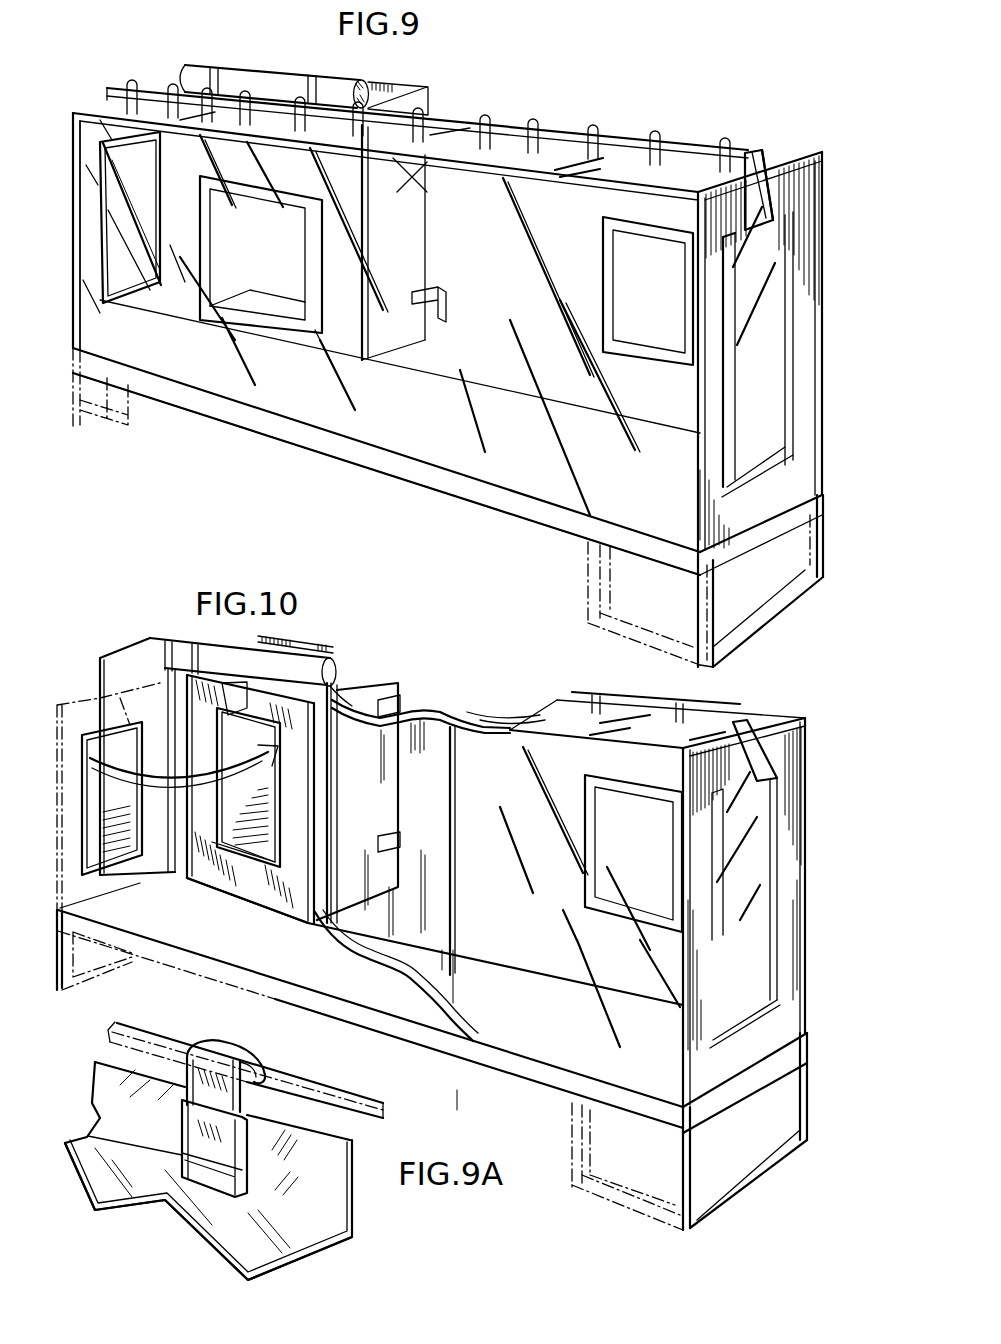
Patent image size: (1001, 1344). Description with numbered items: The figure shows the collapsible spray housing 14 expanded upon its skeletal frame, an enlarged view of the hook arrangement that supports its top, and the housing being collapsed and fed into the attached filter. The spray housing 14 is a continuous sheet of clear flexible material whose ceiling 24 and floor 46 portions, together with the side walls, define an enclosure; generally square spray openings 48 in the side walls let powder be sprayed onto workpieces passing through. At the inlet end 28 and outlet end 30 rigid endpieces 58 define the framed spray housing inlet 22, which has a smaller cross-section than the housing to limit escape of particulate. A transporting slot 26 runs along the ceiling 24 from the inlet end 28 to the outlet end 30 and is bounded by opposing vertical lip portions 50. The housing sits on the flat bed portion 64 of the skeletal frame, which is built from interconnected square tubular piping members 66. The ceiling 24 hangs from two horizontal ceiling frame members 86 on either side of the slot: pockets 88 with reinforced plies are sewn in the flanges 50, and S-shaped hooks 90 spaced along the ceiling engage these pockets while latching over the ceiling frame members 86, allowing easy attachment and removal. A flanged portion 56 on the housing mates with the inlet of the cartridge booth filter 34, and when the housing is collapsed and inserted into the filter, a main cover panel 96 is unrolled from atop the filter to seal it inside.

In FIG. 9, the spray housing 14 is at (697, 112).
In FIG. 9, the spray housing inlet 22 is at (747, 463).
In FIG. 9, the ceiling 24 is at (797, 117).
In FIG. 10, the ceiling 24 is at (625, 715).
In FIG. 9A, the ceiling 24 is at (302, 1238).
In FIG. 9, the transporting slot 26 is at (760, 195).
In FIG. 9, the inlet end 28 is at (712, 513).
In FIG. 9, the outlet end 30 is at (73, 313).
In FIG. 9, the cartridge booth filter 34 is at (427, 162).
In FIG. 10, the floor 46 is at (586, 1043).
In FIG. 9, the spray openings 48 is at (294, 248).
In FIG. 10, the spray openings 48 is at (645, 871).
In FIG. 9, the vertical lip portions 50 is at (627, 150).
In FIG. 9A, the vertical lip portions 50 is at (333, 1197).
In FIG. 9, the flanged portion 56 is at (422, 78).
In FIG. 9, the endpiece 58 is at (92, 236).
In FIG. 10, the endpiece 58 is at (805, 962).
In FIG. 9, the flat bed portion 64 is at (270, 380).
In FIG. 9, the square tubular piping members 66 is at (110, 418).
In FIG. 9, the ceiling frame members 86 is at (427, 123).
In FIG. 9A, the ceiling frame members 86 is at (358, 1070).
In FIG. 9A, the pockets 88 is at (192, 1120).
In FIG. 9, the S-shaped hooks 90 is at (535, 121).
In FIG. 9A, the S-shaped hooks 90 is at (218, 1024).
In FIG. 9, the main cover panel 96 is at (250, 67).
In FIG. 10, the main cover panel 96 is at (168, 648).